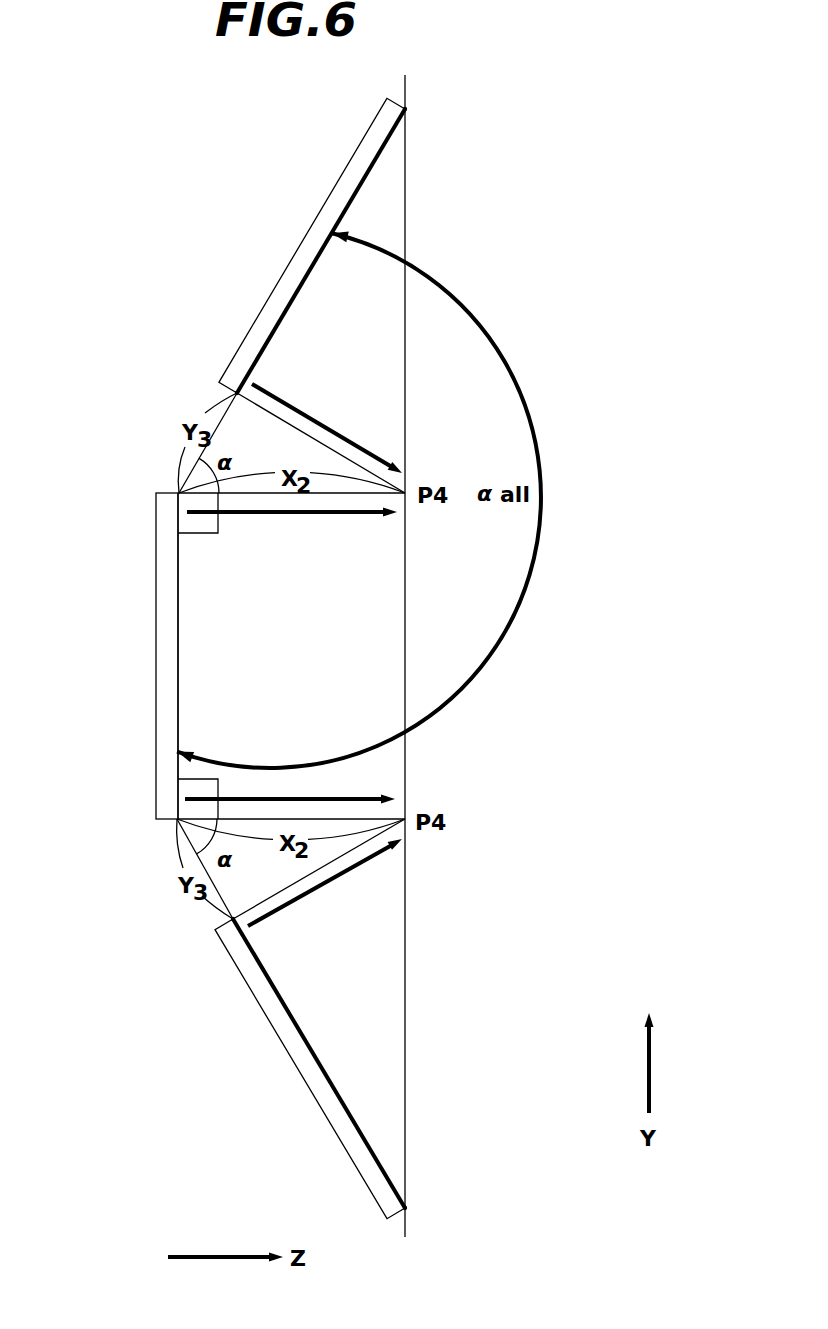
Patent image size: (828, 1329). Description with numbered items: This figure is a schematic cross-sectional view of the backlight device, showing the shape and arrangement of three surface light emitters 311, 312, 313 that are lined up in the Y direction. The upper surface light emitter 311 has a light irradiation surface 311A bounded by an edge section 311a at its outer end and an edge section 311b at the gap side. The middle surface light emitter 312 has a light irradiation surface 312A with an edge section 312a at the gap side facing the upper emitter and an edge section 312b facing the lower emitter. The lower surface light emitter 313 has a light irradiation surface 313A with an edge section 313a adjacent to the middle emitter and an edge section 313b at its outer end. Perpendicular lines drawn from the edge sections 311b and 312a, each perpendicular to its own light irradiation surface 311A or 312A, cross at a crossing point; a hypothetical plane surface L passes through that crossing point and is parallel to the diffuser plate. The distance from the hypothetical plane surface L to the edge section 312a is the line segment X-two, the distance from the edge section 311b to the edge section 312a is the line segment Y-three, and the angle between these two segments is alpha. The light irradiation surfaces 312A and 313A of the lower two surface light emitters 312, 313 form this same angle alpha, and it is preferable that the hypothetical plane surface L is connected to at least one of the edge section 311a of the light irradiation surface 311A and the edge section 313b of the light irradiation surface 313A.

The surface light emitter 311 is at (275, 293).
The light irradiation surface 311A is at (343, 217).
The edge section 311a is at (409, 106).
The edge section 311b is at (240, 390).
The surface light emitter 312 is at (167, 655).
The light irradiation surface 312A is at (180, 645).
The edge section 312a is at (180, 497).
The edge section 312b is at (176, 817).
The surface light emitter 313 is at (297, 1060).
The light irradiation surface 313A is at (302, 1035).
The edge section 313a is at (233, 921).
The edge section 313b is at (403, 1210).
The hypothetical plane surface L is at (408, 237).